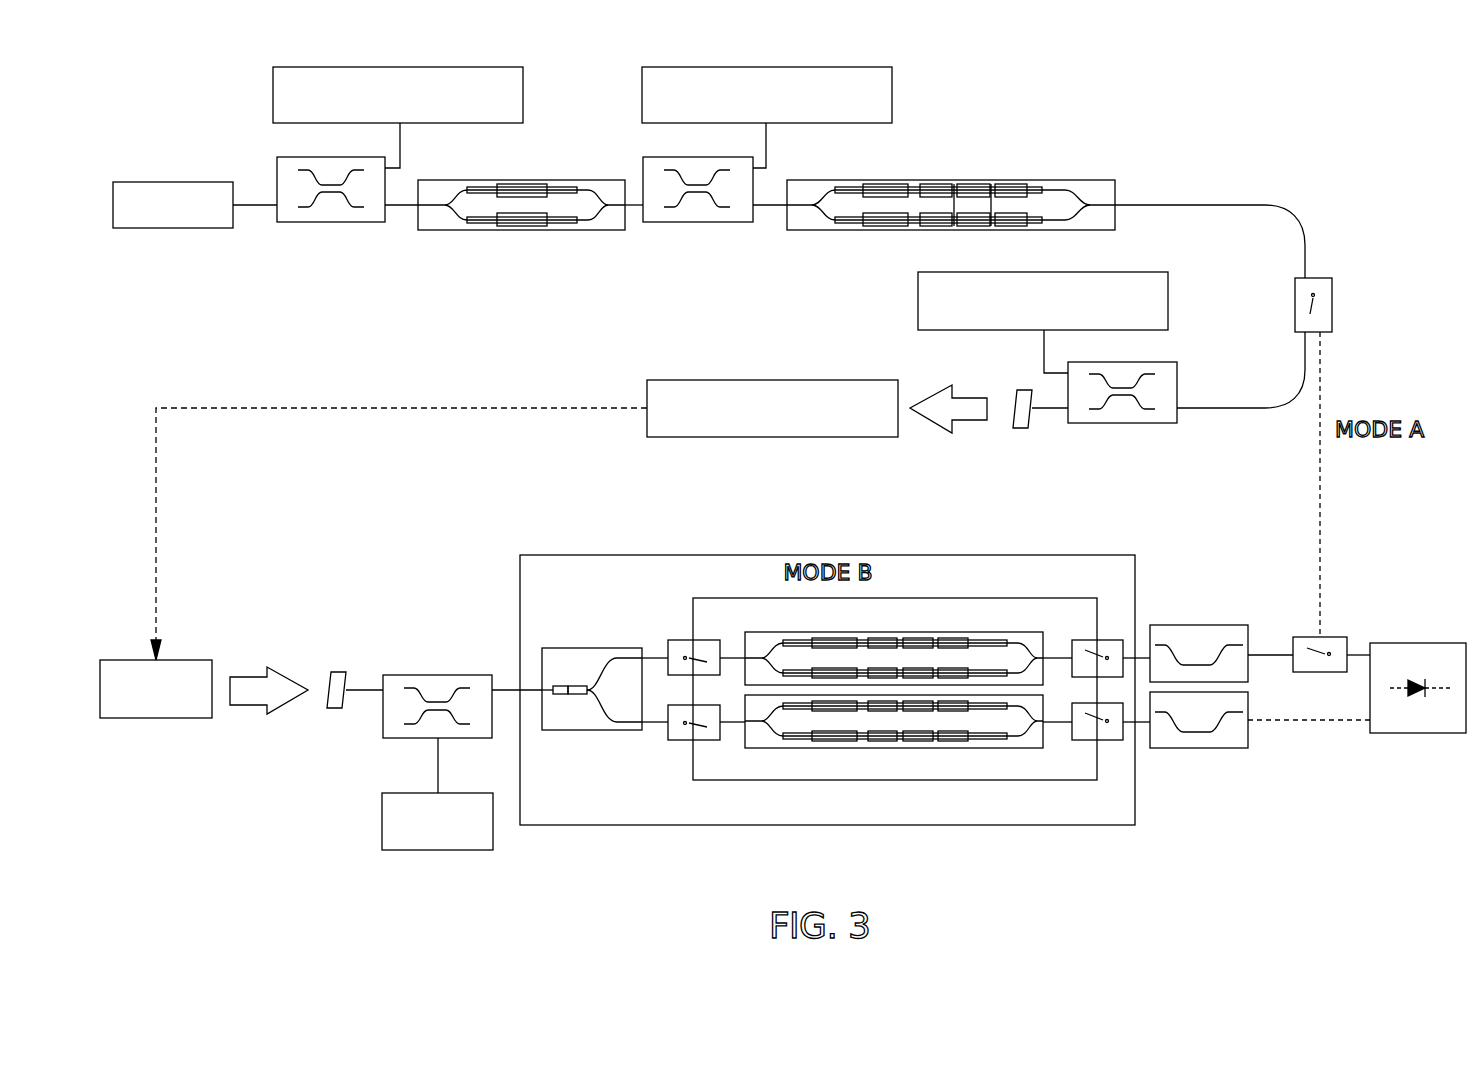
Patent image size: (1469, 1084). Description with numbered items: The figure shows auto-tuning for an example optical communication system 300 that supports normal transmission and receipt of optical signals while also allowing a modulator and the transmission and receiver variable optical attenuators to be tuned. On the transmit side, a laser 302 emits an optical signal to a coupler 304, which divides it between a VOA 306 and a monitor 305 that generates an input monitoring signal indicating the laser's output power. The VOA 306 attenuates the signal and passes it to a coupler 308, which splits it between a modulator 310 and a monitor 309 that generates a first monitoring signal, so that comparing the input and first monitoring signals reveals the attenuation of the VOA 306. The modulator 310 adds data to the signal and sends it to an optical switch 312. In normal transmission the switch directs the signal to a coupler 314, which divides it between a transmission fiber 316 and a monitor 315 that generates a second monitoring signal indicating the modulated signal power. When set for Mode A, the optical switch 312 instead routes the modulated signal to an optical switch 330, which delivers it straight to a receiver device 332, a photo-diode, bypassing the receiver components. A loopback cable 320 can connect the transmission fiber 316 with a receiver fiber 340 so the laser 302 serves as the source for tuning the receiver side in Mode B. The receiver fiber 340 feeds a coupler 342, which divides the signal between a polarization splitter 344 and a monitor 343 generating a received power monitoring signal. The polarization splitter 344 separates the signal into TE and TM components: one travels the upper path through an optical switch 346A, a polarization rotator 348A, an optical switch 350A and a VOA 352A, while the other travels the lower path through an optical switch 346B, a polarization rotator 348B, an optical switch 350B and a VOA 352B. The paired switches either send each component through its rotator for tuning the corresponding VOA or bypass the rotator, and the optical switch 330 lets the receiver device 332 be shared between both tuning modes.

The optical communication system 300 is at (200, 115).
The laser 302 is at (172, 228).
The coupler 304 is at (330, 222).
The monitor 305 is at (523, 103).
The VOA 306 is at (560, 230).
The coupler 308 is at (697, 222).
The monitor 309 is at (892, 103).
The modulator 310 is at (850, 230).
The optical switch 312 is at (1295, 307).
The coupler 314 is at (1124, 423).
The monitor 315 is at (1160, 272).
The transmission fiber 316 is at (757, 437).
The loopback cable 320 is at (277, 405).
The optical switch 330 is at (1340, 637).
The receiver device 332 is at (1420, 733).
The receiver fiber 340 is at (154, 718).
The coupler 342 is at (430, 675).
The monitor 343 is at (445, 850).
The polarization splitter 344 is at (583, 730).
The optical switch 346A is at (680, 640).
The optical switch 346B is at (680, 740).
The polarization rotator 348A is at (903, 632).
The polarization rotator 348B is at (900, 748).
The optical switch 350A is at (1085, 640).
The optical switch 350B is at (1085, 740).
The VOA 352A is at (1208, 625).
The VOA 352B is at (1200, 748).